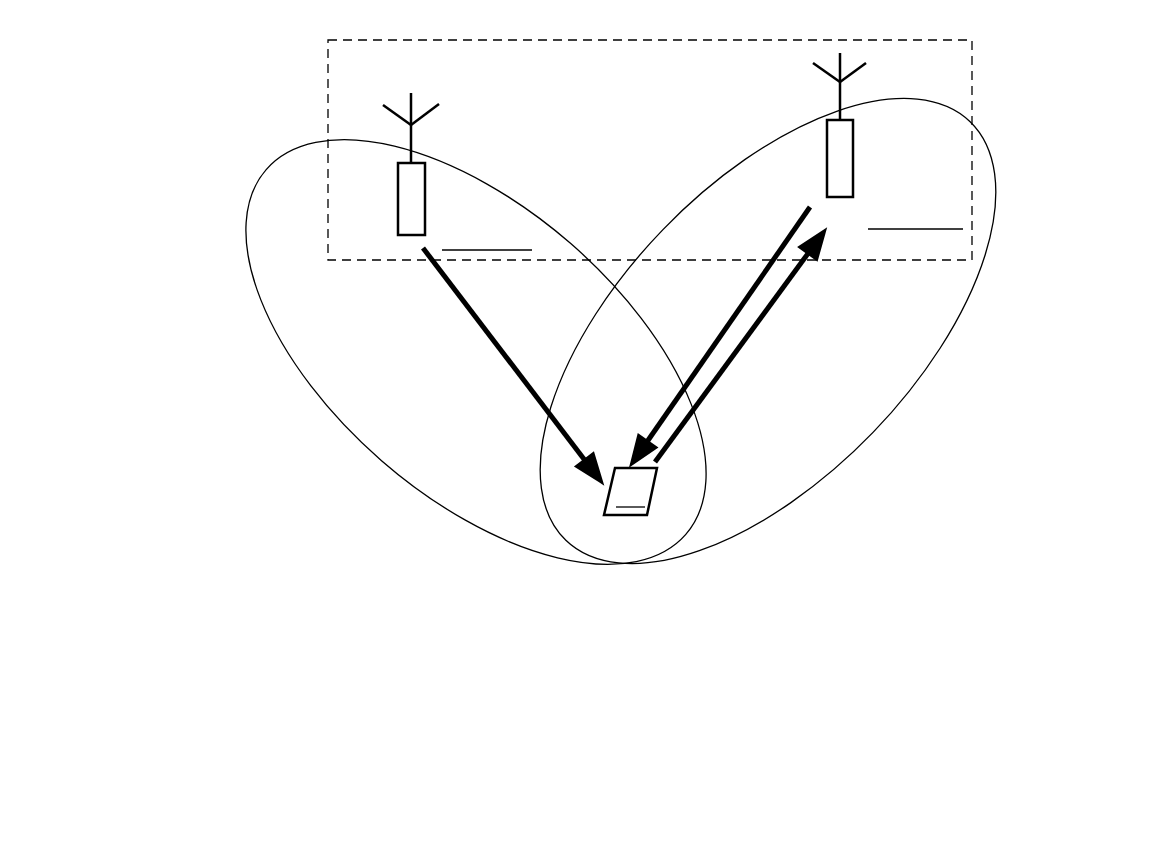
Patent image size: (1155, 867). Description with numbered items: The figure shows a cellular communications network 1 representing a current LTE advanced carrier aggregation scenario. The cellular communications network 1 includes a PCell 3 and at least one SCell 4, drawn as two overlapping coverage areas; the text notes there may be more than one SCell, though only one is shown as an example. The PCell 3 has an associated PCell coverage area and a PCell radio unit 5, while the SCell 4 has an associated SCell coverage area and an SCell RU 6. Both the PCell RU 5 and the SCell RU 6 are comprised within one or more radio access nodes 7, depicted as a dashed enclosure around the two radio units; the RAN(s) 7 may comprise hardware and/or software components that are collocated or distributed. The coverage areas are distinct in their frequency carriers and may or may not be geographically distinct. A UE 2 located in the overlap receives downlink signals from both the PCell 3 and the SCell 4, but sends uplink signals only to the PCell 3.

The cellular communications network 1 is at (196, 141).
The UE 2 is at (636, 526).
The PCell 3 is at (980, 331).
The SCell 4 is at (238, 375).
The PCell radio unit (RU) 5 is at (872, 181).
The SCell RU 6 is at (396, 188).
The radio access node(s) (RAN(s)) 7 is at (783, 83).